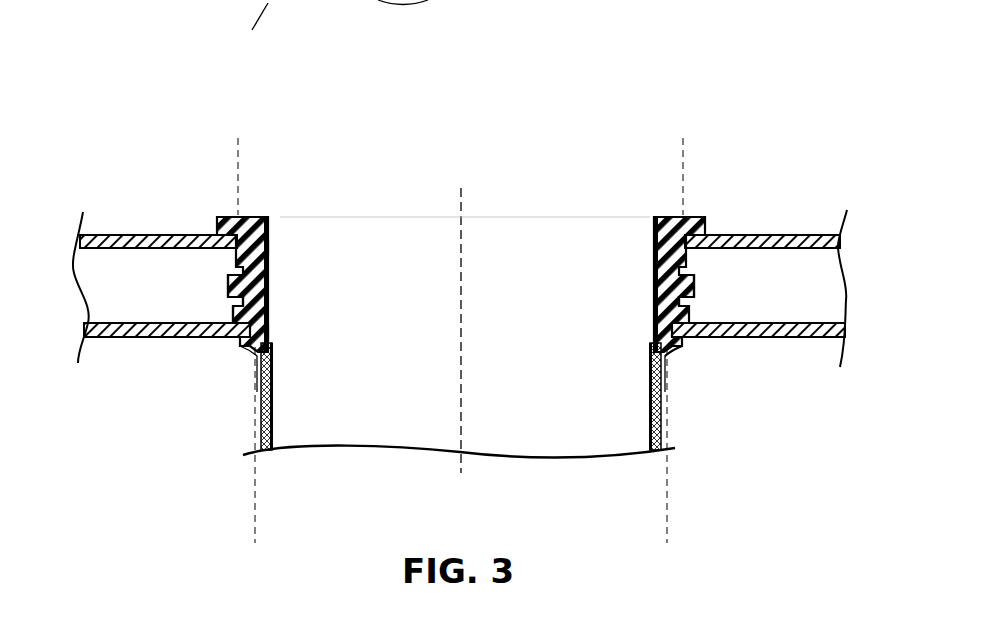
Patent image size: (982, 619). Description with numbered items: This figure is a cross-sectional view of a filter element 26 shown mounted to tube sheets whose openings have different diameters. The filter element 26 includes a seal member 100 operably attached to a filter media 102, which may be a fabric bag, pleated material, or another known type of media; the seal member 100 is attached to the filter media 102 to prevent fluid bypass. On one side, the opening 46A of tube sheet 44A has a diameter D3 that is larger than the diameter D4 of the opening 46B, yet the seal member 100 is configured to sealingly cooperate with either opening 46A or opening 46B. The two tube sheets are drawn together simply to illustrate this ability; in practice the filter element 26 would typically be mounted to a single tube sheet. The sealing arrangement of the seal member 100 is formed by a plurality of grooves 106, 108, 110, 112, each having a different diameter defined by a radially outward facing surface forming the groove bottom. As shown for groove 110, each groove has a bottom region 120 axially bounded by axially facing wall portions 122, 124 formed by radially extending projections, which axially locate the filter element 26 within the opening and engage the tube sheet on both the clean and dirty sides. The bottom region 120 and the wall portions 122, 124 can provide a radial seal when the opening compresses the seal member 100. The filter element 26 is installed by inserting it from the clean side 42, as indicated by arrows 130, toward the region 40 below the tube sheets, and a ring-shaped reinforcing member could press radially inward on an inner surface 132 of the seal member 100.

The filter element 26 is at (700, 205).
The first housing portion 40 is at (778, 480).
The clean side 42 is at (565, 110).
The tube sheet 44A is at (158, 235).
The opening 46A is at (268, 247).
The opening 46B is at (268, 332).
The seal member 100 is at (638, 273).
The filter media 102 is at (653, 383).
The groove 106 is at (715, 228).
The groove 108 is at (692, 266).
The groove 110 is at (692, 298).
The groove 112 is at (687, 353).
The bottom region 120 is at (242, 306).
The axially facing wall portion 122 is at (237, 307).
The axially facing wall portion 124 is at (244, 298).
The arrows 130 is at (398, 148).
The inner surface 132 is at (266, 302).
The diameter D3 is at (683, 163).
The diameter D4 is at (667, 519).